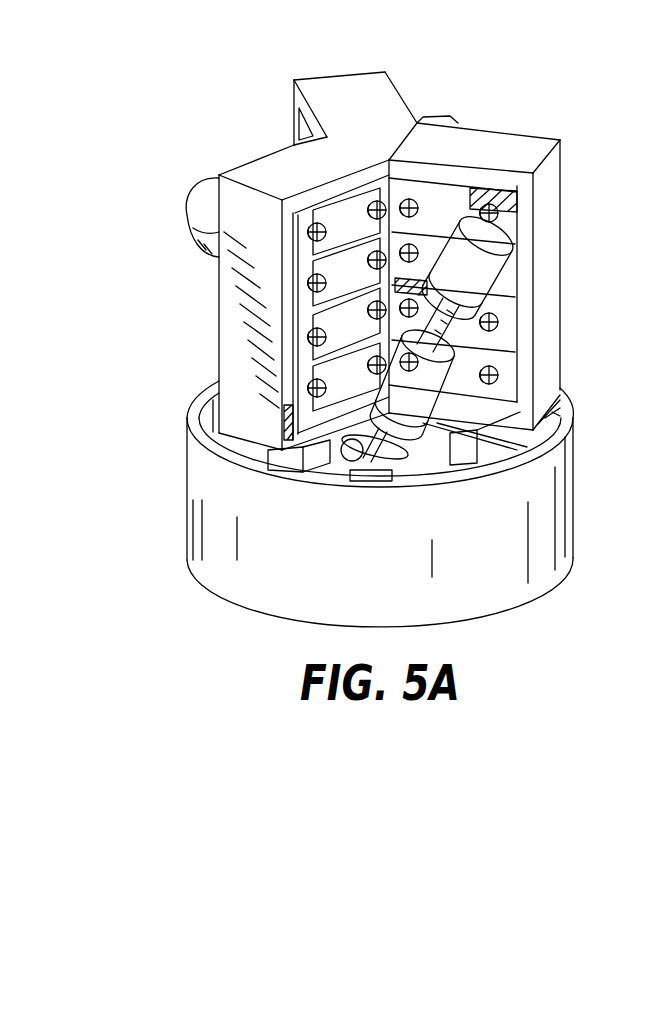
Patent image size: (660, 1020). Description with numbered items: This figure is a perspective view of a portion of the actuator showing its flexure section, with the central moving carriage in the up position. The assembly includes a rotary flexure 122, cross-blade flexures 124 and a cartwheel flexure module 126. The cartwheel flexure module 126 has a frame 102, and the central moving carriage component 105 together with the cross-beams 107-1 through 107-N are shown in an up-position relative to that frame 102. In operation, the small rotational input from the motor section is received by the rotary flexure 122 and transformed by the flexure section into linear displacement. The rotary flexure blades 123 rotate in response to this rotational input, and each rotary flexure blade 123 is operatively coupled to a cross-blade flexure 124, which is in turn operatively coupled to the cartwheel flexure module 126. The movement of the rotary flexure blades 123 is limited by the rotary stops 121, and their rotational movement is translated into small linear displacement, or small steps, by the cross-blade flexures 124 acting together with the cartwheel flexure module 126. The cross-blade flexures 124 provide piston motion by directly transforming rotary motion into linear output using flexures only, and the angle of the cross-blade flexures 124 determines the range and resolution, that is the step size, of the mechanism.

The frame 102 is at (285, 263).
The central moving carriage component 105 is at (300, 331).
The cross-beam 107-1 is at (440, 214).
The cross-beam 107-N is at (515, 375).
The rotary stop 121 is at (345, 462).
The rotary flexure 122 is at (380, 504).
The rotary flexure blade 123 is at (340, 437).
The cross-blade flexure 124 is at (447, 123).
The cartwheel flexure module 126 is at (317, 87).